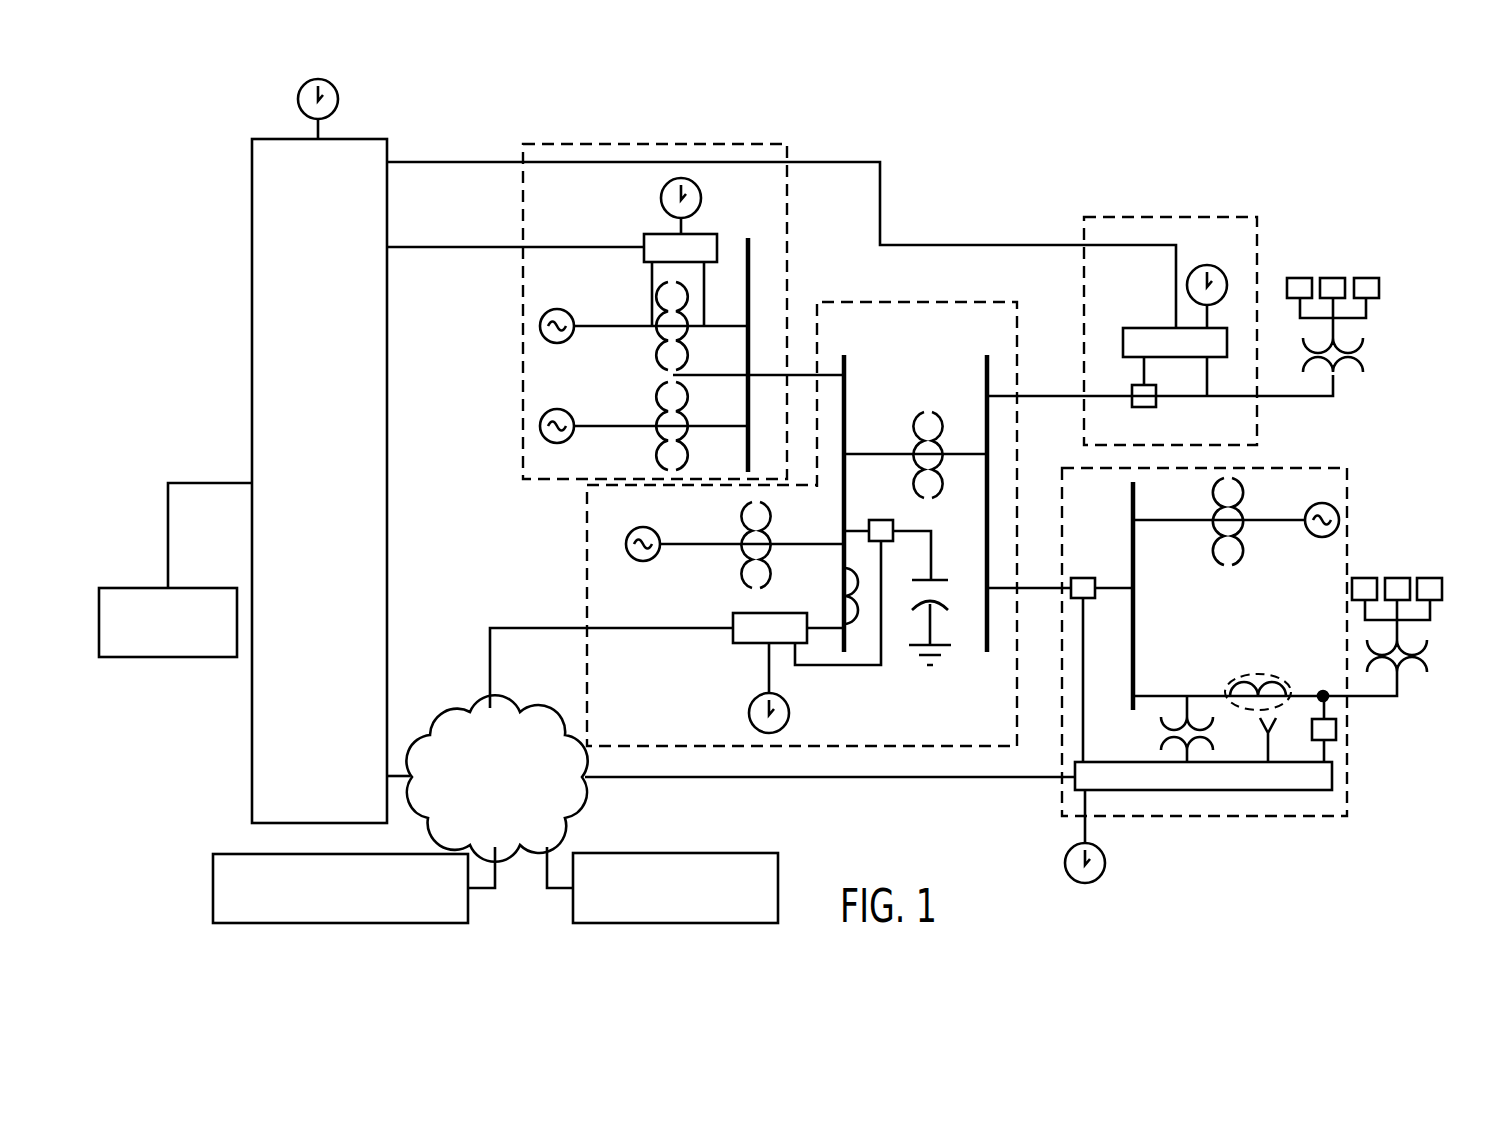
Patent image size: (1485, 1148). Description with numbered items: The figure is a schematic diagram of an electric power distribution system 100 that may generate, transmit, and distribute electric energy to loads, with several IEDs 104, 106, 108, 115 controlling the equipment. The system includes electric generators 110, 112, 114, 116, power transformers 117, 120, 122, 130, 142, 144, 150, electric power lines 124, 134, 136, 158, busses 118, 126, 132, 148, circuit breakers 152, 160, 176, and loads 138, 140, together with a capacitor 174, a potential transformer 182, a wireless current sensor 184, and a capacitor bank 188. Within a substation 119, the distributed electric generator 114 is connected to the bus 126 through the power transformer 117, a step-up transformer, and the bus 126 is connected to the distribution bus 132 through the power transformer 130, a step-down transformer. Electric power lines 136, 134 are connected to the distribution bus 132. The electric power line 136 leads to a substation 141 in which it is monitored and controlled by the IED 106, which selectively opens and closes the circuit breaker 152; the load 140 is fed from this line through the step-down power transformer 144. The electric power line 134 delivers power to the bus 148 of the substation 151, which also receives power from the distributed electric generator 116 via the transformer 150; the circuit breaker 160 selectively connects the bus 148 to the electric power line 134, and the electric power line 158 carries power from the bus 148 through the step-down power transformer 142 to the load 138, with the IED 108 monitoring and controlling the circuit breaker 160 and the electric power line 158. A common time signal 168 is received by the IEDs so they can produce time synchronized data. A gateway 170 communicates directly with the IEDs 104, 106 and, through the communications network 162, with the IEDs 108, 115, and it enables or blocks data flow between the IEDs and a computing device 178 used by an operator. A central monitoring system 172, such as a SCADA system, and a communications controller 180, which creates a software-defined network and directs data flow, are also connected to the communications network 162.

The electric power distribution system 100 is at (1342, 130).
The IED 104 is at (664, 234).
The IED 106 is at (1138, 327).
The IED 108 is at (1258, 790).
The electric generator 110 is at (565, 311).
The electric generator 112 is at (565, 411).
The electric generator 114 is at (648, 530).
The IED 115 is at (772, 612).
The electric generator 116 is at (1320, 537).
The power transformer 117 is at (745, 578).
The bus 118 is at (751, 240).
The substation 119 is at (588, 578).
The power transformer 120 is at (661, 358).
The power transformer 122 is at (661, 456).
The electric power line 124 is at (800, 372).
The bus 126 is at (847, 387).
The power transformer 130 is at (925, 410).
The distribution bus 132 is at (985, 632).
The electric power line 134 is at (1027, 590).
The electric power line 136 is at (1108, 398).
The load 138 is at (1397, 578).
The load 140 is at (1366, 277).
The substation 141 is at (1106, 216).
The power transformer 142 is at (1428, 653).
The power transformer 144 is at (1365, 356).
The bus 148 is at (1131, 484).
The transformer 150 is at (1232, 482).
The substation 151 is at (1325, 818).
The circuit breaker 152 is at (1140, 407).
The electric power line 158 is at (1370, 698).
The circuit breaker 160 is at (1097, 578).
The communications network 162 is at (452, 720).
The common time signal 168 is at (338, 97).
The gateway 170 is at (388, 480).
The central monitoring system 172 is at (213, 880).
The capacitor 174 is at (942, 578).
The circuit breaker 176 is at (878, 520).
The computing device 178 is at (168, 657).
The communications controller 180 is at (663, 853).
The potential transformer 182 is at (1158, 733).
The wireless current sensor 184 is at (1260, 675).
The capacitor bank 188 is at (1336, 730).